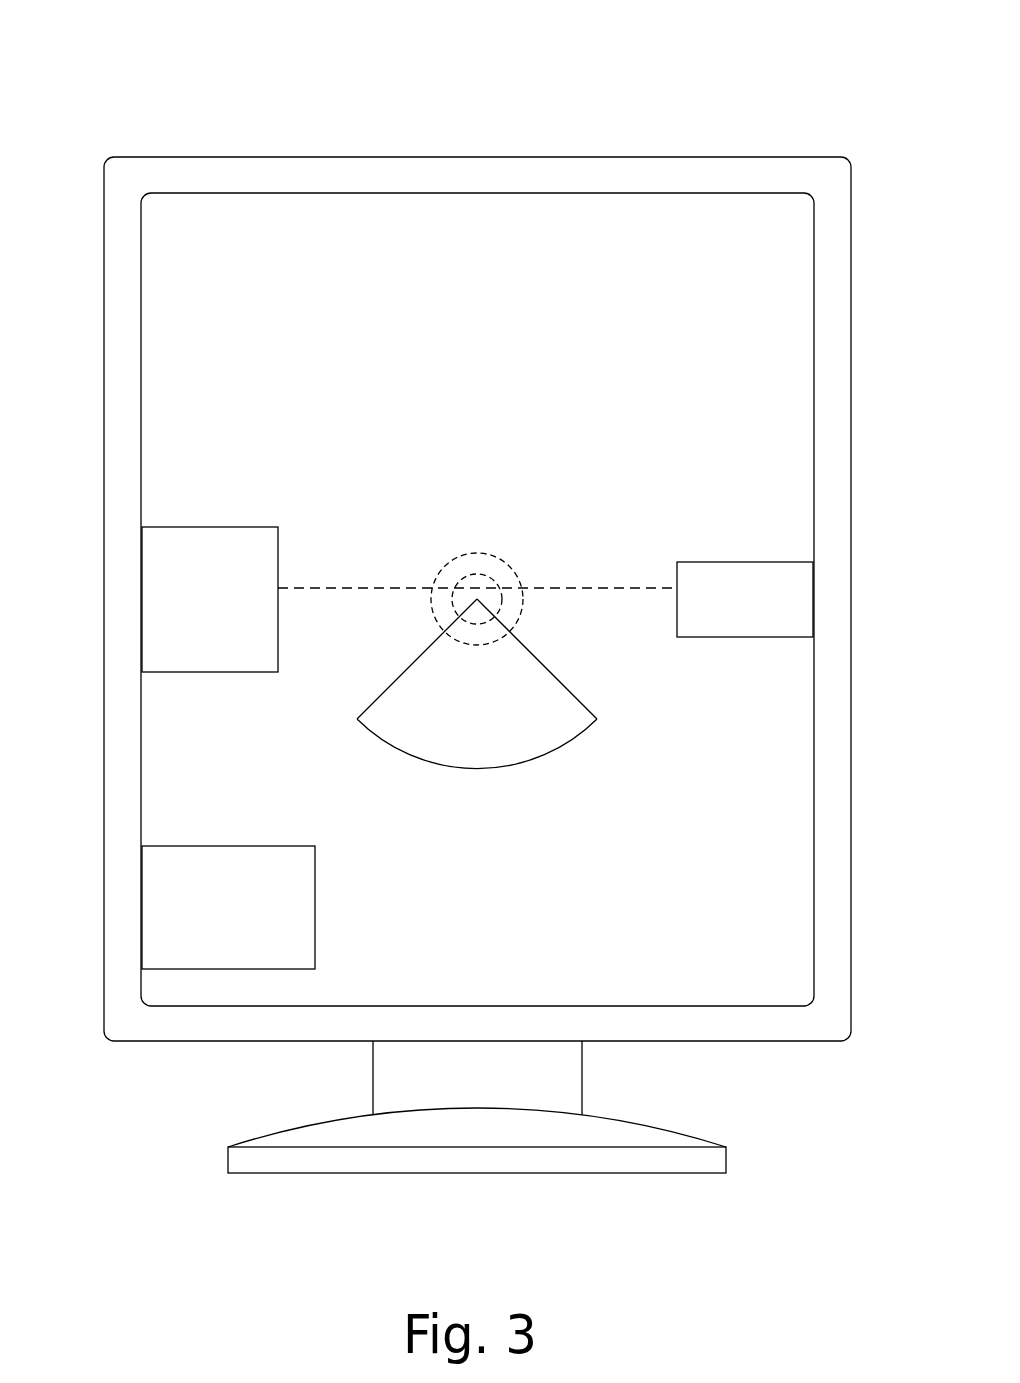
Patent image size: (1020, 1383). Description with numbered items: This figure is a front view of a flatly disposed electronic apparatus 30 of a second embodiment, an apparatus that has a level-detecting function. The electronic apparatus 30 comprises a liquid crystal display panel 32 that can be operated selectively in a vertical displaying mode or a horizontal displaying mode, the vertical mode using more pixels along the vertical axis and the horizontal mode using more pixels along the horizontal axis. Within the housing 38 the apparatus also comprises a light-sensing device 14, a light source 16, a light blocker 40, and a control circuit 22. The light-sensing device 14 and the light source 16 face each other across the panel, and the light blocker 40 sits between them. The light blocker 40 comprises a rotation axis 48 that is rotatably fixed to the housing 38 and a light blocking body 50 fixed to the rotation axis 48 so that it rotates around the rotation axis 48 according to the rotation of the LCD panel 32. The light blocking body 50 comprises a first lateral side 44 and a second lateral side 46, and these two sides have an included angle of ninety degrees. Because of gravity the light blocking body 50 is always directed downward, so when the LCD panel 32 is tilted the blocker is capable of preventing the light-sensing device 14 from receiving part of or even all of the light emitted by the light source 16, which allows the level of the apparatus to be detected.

The electronic apparatus 30 is at (487, 588).
The liquid crystal display panel 32 is at (738, 157).
The housing 38 is at (768, 944).
The light-sensing device 14 is at (155, 578).
The light source 16 is at (795, 580).
The control circuit 22 is at (155, 872).
The light blocker 40 is at (480, 742).
The first lateral side 44 is at (388, 684).
The second lateral side 46 is at (538, 660).
The rotation axis 48 is at (492, 563).
The light blocking body 50 is at (476, 770).